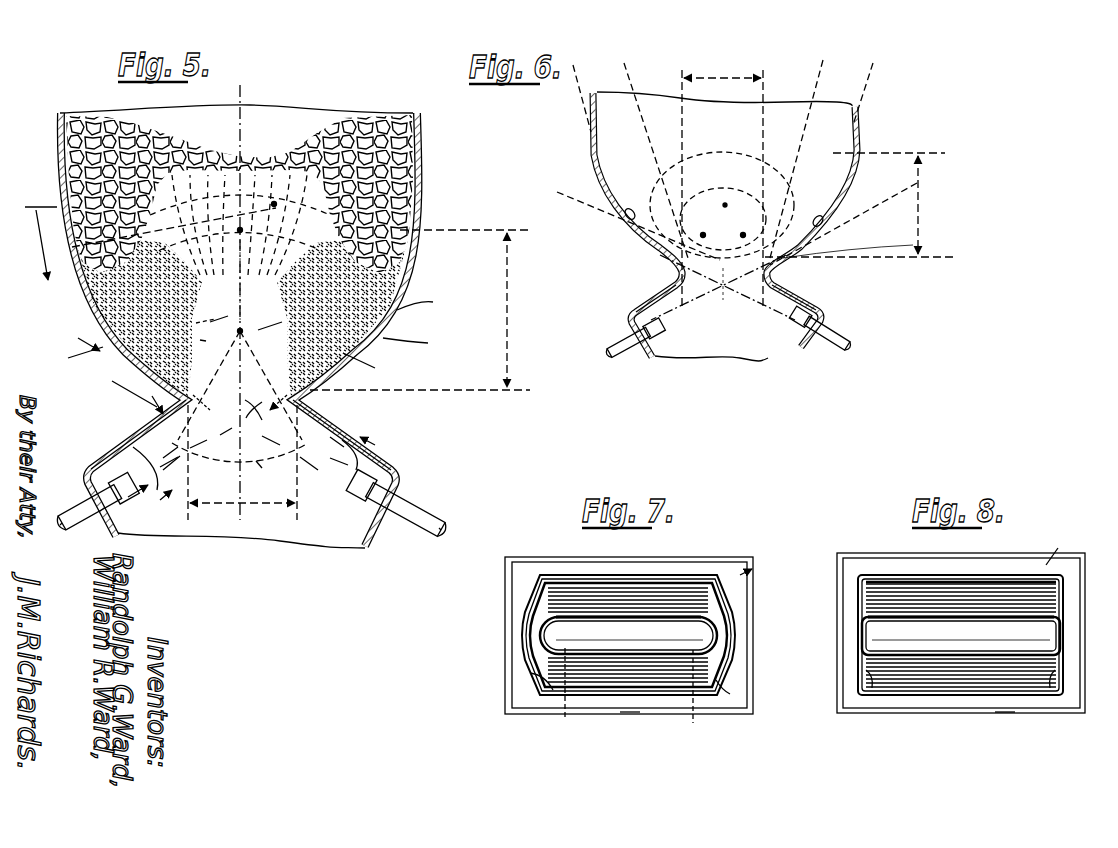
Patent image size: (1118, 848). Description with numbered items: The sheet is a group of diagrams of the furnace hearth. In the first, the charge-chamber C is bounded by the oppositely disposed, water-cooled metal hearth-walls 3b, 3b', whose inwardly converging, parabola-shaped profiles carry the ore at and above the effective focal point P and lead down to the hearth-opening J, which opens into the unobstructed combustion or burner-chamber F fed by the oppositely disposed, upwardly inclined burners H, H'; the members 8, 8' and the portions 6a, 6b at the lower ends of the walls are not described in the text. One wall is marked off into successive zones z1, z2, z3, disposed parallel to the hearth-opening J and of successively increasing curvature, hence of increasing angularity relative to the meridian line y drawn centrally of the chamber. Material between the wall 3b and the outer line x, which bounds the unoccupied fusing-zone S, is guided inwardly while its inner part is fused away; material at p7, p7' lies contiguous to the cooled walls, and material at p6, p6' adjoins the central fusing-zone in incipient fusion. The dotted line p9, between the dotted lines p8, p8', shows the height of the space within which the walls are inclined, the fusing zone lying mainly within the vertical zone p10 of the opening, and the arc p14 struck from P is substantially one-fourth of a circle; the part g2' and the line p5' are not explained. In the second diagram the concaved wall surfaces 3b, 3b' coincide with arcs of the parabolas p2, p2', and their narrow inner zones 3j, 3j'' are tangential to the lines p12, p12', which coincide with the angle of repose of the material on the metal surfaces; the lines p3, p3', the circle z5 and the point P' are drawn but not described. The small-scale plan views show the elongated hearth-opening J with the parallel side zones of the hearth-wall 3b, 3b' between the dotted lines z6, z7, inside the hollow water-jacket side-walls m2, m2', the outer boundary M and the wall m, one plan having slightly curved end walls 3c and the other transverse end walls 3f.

In FIG. 5, the hearth-wall 3b is at (99, 324).
In FIG. 6, the hearth-wall 3b is at (633, 225).
In FIG. 7, the hearth-wall 3b is at (629, 696).
In FIG. 8, the hearth-wall 3b is at (961, 694).
In FIG. 5, the hearth-wall 3b' is at (380, 329).
In FIG. 6, the hearth-wall 3b' is at (812, 227).
In FIG. 7, the hearth-wall 3b' is at (628, 613).
In FIG. 8, the hearth-wall 3b' is at (960, 615).
In FIG. 5, the narrow inner zone of hearth-wall 3j is at (135, 434).
In FIG. 6, the narrow inner zone of hearth-wall 3j is at (648, 284).
In FIG. 5, the narrow inner zone of opposite hearth-wall 3j'' is at (342, 435).
In FIG. 6, the narrow inner zone of opposite hearth-wall 3j'' is at (805, 286).
In FIG. 7, the nozzle corner 3c is at (550, 684).
In FIG. 8, the nozzle side wall 3f is at (872, 688).
In FIG. 5, the lip plate 6a is at (153, 481).
In FIG. 5, the lip plate (opposite side) 6b is at (352, 453).
In FIG. 5, the clamping bolt 8 is at (96, 498).
In FIG. 5, the clamping bolt (opposite side) 8' is at (398, 506).
In FIG. 5, the burner H is at (72, 540).
In FIG. 5, the burner H' is at (416, 539).
In FIG. 5, the charge-chamber C is at (236, 250).
In FIG. 6, the charge-chamber C is at (724, 110).
In FIG. 5, the focal point P is at (229, 315).
In FIG. 6, the focal point P is at (707, 207).
In FIG. 6, the focal point (displaced) P' is at (739, 225).
In FIG. 5, the space S is at (205, 350).
In FIG. 5, the outer line x is at (215, 327).
In FIG. 5, the meridian line y is at (240, 290).
In FIG. 5, the hearth-opening J is at (239, 415).
In FIG. 6, the hearth-opening J is at (737, 268).
In FIG. 7, the hearth-opening J is at (628, 635).
In FIG. 8, the hearth-opening J is at (961, 636).
In FIG. 5, the combustion chamber F is at (241, 510).
In FIG. 6, the combustion chamber F is at (729, 333).
In FIG. 5, the upper zone of hearth-wall z1 is at (41, 243).
In FIG. 5, the intermediate zone of hearth-wall z2 is at (80, 336).
In FIG. 5, the lower zone of hearth-wall z3 is at (136, 396).
In FIG. 6, the zone 5 circle z5 is at (744, 158).
In FIG. 6, the dotted line z6 is at (746, 196).
In FIG. 7, the dotted line z6 is at (690, 740).
In FIG. 7, the dotted line z7 is at (566, 722).
In FIG. 6, the parabola p2 is at (566, 98).
In FIG. 6, the parabola p2' is at (880, 95).
In FIG. 6, the plane p3 is at (651, 160).
In FIG. 6, the plane p3' is at (803, 159).
In FIG. 5, the plane p5' is at (418, 341).
In FIG. 5, the material adjacent to fusing-zone p6 is at (203, 315).
In FIG. 5, the material adjacent to fusing-zone p6' is at (274, 319).
In FIG. 5, the material contiguous to cooled wall p7 is at (74, 358).
In FIG. 5, the material contiguous to cooled wall p7' is at (429, 300).
In FIG. 5, the dotted line p8 is at (301, 225).
In FIG. 6, the dotted line p8 is at (902, 161).
In FIG. 5, the dotted line p8' is at (420, 398).
In FIG. 6, the dotted line p8' is at (859, 268).
In FIG. 5, the height line p9 is at (528, 292).
In FIG. 6, the height line p9 is at (922, 197).
In FIG. 5, the vertical zone p10 is at (248, 508).
In FIG. 6, the vertical zone p10 is at (735, 76).
In FIG. 6, the angle-of-repose line p12 is at (664, 256).
In FIG. 6, the angle-of-repose line p12' is at (843, 224).
In FIG. 5, the hearth-opening arc p14 is at (263, 472).
In FIG. 5, the gas passage g2' is at (372, 365).
In FIG. 7, the mould M is at (524, 704).
In FIG. 8, the mould M is at (851, 704).
In FIG. 7, the mould wall m is at (756, 566).
In FIG. 8, the mould wall m is at (1060, 542).
In FIG. 7, the hollow side-wall m2 is at (626, 747).
In FIG. 8, the hollow side-wall m2 is at (1004, 741).
In FIG. 7, the hollow side-wall m2' is at (629, 621).
In FIG. 8, the hollow side-wall m2' is at (961, 620).